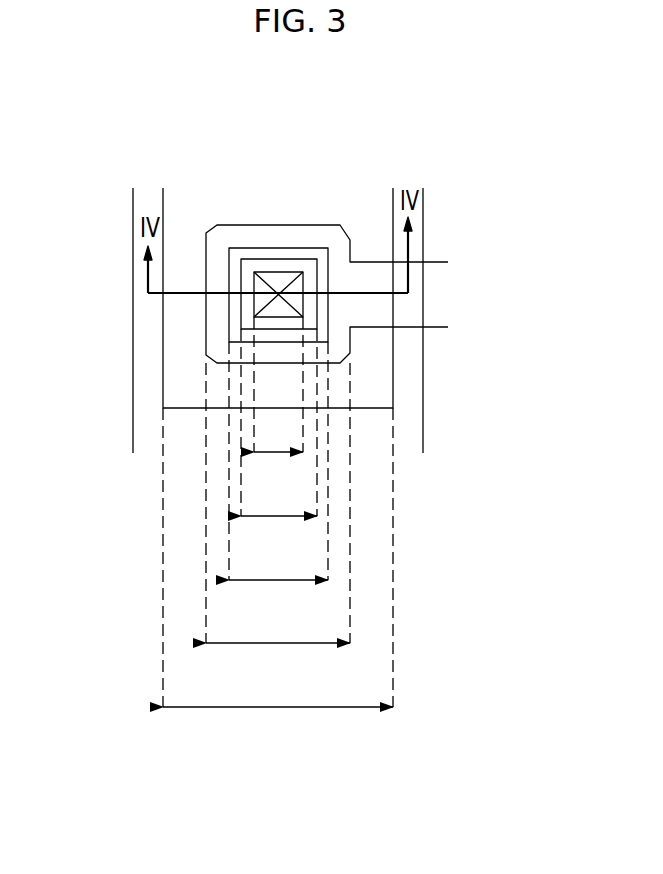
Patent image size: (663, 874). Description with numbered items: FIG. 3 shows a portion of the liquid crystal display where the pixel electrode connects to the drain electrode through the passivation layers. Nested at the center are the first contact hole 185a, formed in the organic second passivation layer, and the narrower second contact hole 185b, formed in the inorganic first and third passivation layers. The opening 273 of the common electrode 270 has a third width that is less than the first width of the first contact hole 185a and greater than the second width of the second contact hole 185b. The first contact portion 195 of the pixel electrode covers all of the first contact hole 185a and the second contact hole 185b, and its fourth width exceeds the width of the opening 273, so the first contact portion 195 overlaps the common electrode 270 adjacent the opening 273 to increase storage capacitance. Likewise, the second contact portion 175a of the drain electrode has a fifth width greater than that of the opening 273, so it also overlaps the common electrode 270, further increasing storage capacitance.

The common electrode 270 is at (133, 344).
The first contact portion 195 is at (393, 388).
The second contact portion 175a is at (324, 225).
The first contact hole 185a is at (303, 247).
The second contact hole 185b is at (274, 272).
The opening 273 is at (253, 258).